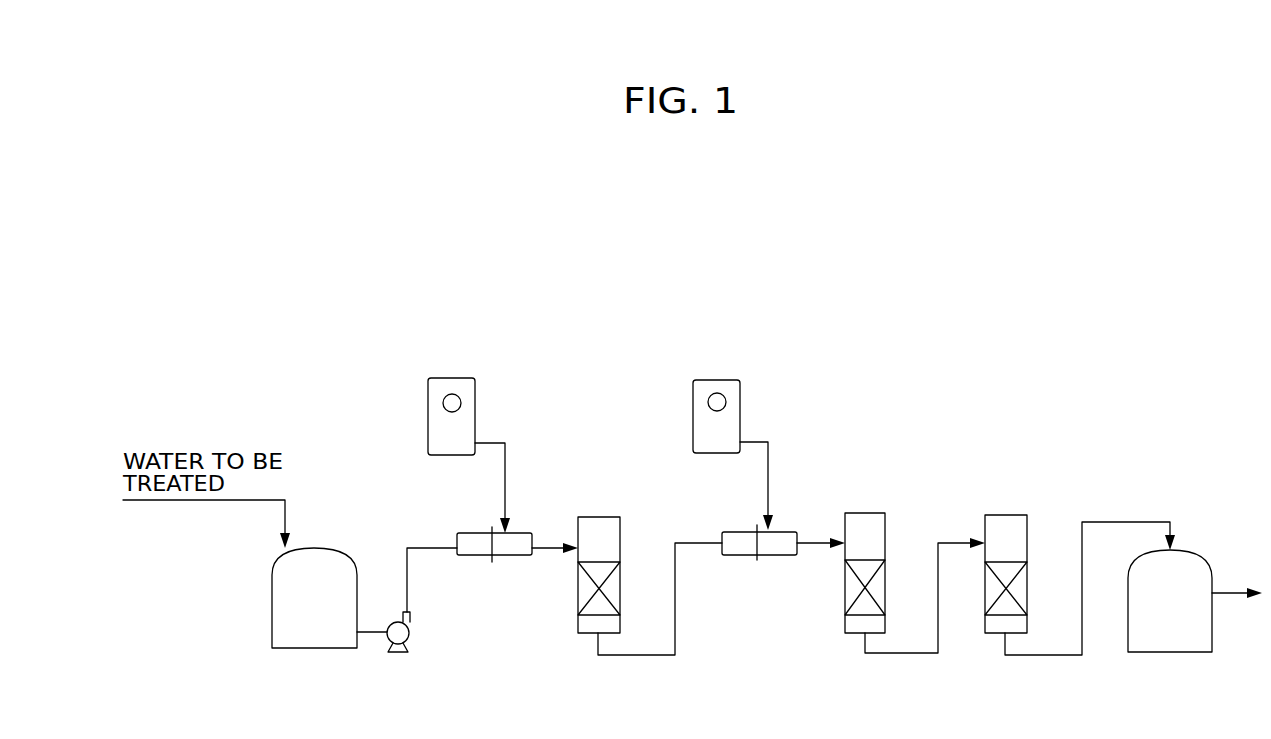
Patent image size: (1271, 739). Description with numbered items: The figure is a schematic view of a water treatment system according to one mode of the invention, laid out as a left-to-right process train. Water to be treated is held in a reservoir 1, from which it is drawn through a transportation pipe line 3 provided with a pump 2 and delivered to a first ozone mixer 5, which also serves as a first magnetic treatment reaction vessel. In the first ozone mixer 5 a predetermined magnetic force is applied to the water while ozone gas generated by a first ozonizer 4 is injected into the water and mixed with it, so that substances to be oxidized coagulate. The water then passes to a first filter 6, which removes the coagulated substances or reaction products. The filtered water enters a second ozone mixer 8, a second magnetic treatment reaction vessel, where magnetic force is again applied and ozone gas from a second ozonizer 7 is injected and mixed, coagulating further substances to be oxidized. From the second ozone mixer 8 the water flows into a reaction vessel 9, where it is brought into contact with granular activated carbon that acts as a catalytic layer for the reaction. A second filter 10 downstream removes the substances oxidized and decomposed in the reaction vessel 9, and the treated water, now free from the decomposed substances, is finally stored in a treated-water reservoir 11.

The reservoir 1 is at (272, 622).
The pump 2 is at (382, 652).
The transportation pipe line 3 is at (408, 583).
The first ozonizer 4 is at (475, 400).
The first ozone mixer 5 is at (522, 557).
The first filter 6 is at (620, 543).
The second ozonizer 7 is at (728, 380).
The second ozone mixer 8 is at (785, 557).
The reaction vessel 9 is at (885, 530).
The second filter 10 is at (1020, 515).
The treated-water reservoir 11 is at (1200, 553).